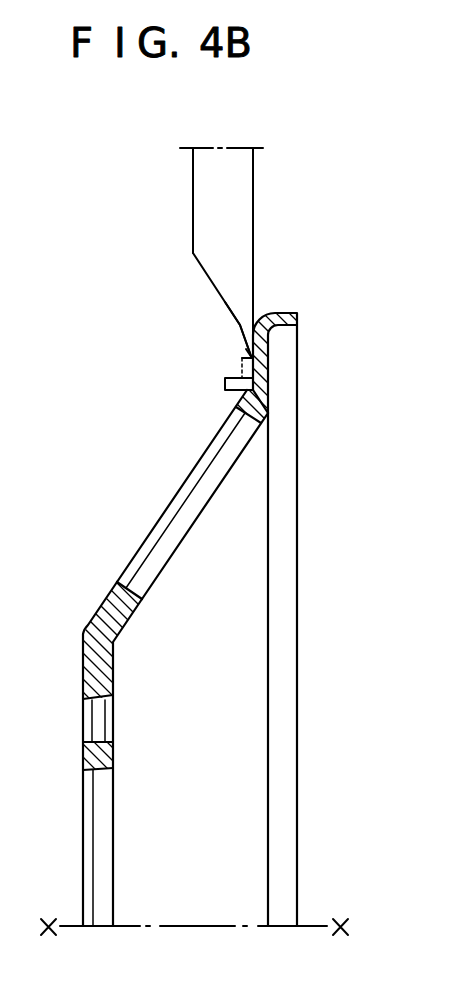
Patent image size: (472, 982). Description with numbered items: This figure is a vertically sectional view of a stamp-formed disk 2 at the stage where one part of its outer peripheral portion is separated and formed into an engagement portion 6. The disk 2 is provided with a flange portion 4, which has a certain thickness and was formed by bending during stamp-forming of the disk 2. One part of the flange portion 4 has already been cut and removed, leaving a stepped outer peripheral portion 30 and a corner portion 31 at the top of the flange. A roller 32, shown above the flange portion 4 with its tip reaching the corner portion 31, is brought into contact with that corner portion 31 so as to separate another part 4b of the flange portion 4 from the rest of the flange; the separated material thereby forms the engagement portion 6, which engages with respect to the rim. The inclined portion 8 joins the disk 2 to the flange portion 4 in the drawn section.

The roller 32 is at (242, 192).
The corner portion 31 is at (250, 357).
The stepped outer peripheral portion 30 is at (250, 356).
The another part of the flange portion 4b is at (240, 372).
The engagement portion 6 is at (226, 385).
The flange portion 4 is at (296, 311).
The inclined connecting portion 8 is at (185, 532).
The disk 2 is at (103, 622).